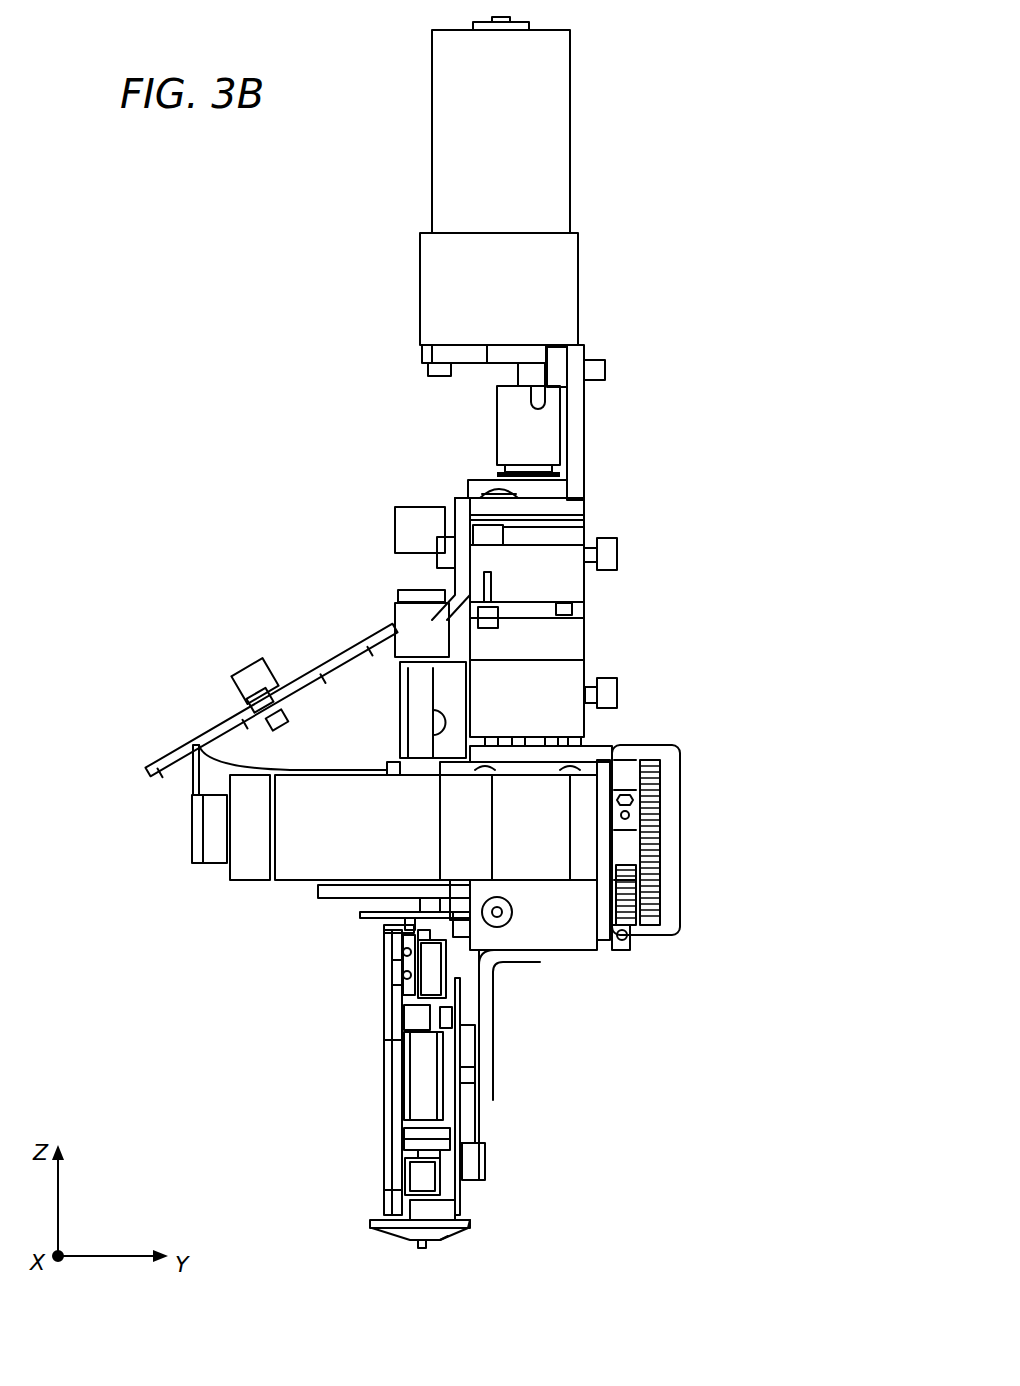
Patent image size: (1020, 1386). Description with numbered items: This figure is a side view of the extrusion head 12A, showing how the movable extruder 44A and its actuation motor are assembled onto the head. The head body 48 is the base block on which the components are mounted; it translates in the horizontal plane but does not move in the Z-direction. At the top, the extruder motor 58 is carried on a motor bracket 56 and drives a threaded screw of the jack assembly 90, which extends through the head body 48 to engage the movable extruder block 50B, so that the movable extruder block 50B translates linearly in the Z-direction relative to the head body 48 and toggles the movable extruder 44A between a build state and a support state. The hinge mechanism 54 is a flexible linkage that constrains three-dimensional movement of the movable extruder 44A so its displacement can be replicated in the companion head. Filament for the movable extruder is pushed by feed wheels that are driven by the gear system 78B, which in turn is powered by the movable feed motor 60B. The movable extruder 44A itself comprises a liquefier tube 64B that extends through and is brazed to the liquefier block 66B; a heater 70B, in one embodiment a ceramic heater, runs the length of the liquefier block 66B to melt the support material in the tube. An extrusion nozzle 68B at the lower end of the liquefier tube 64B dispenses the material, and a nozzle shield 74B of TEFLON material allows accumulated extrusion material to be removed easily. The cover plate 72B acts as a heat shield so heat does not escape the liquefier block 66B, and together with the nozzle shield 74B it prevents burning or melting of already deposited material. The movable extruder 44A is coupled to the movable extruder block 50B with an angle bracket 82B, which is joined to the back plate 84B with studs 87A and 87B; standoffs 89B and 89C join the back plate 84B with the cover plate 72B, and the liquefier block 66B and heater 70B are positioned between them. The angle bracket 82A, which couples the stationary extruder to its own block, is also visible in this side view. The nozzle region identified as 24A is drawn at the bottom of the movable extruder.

The extrusion head 12A is at (619, 175).
The extruder motor 58 is at (568, 108).
The motor bracket 56 is at (575, 430).
The jack assembly 90 is at (486, 420).
The head body 48 is at (575, 582).
The movable extruder block 50B is at (585, 935).
The gear system 78B is at (692, 848).
The movable feed motor 60B is at (190, 858).
The movable extruder 44A is at (367, 1196).
The liquefier tube 64B is at (385, 920).
The heater 70B is at (405, 1005).
The standoff 89B is at (405, 1025).
The liquefier block 66B is at (405, 1042).
The cover plate 72B is at (385, 1112).
The standoff 89C is at (405, 1138).
The angle bracket 82B is at (485, 1047).
The stud 87A is at (475, 1050).
The back plate 84B is at (460, 1087).
The angle bracket 82A is at (487, 1130).
The stud 87B is at (475, 1167).
The hinge mechanism 54 is at (465, 1205).
The pipette tip interface 24A is at (487, 1235).
The extrusion nozzle 68B is at (402, 1254).
The nozzle shield 74B is at (452, 1252).